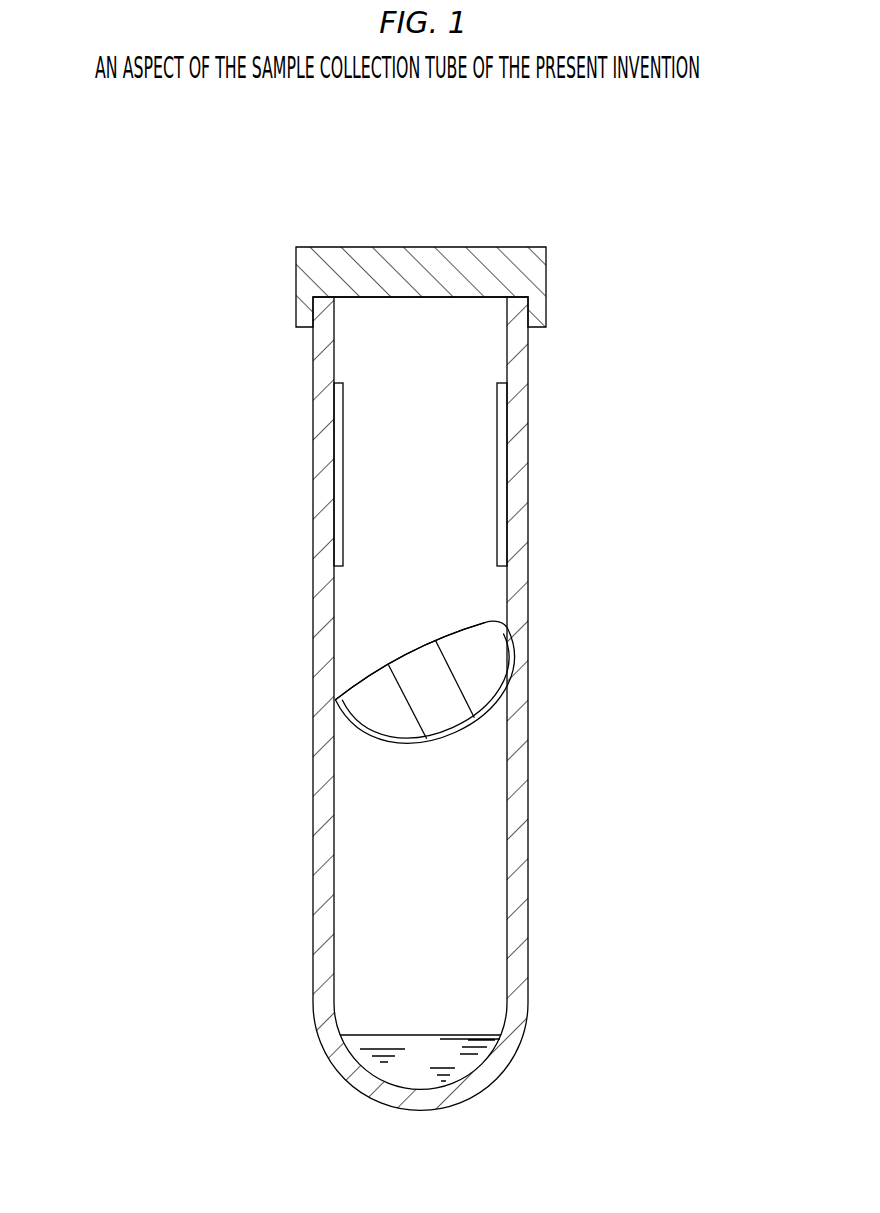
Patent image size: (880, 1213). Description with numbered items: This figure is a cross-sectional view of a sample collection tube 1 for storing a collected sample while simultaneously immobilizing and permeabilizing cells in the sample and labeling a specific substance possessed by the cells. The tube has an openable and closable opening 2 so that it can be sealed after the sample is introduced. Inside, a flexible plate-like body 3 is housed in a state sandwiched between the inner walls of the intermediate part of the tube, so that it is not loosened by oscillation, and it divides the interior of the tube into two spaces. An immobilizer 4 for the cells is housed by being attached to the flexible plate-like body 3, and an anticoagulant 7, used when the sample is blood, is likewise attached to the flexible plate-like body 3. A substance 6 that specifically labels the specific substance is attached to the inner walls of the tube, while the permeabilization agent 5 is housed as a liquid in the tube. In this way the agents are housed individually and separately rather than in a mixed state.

The sample collection tube 1 is at (600, 377).
The openable and closable opening 2 is at (423, 268).
The flexible plate-like body 3 is at (460, 737).
The immobilizer 4 is at (480, 652).
The permeabilization agent 5 is at (463, 1057).
The substance that labels specific substance 6 is at (505, 455).
The anticoagulant 7 is at (370, 702).